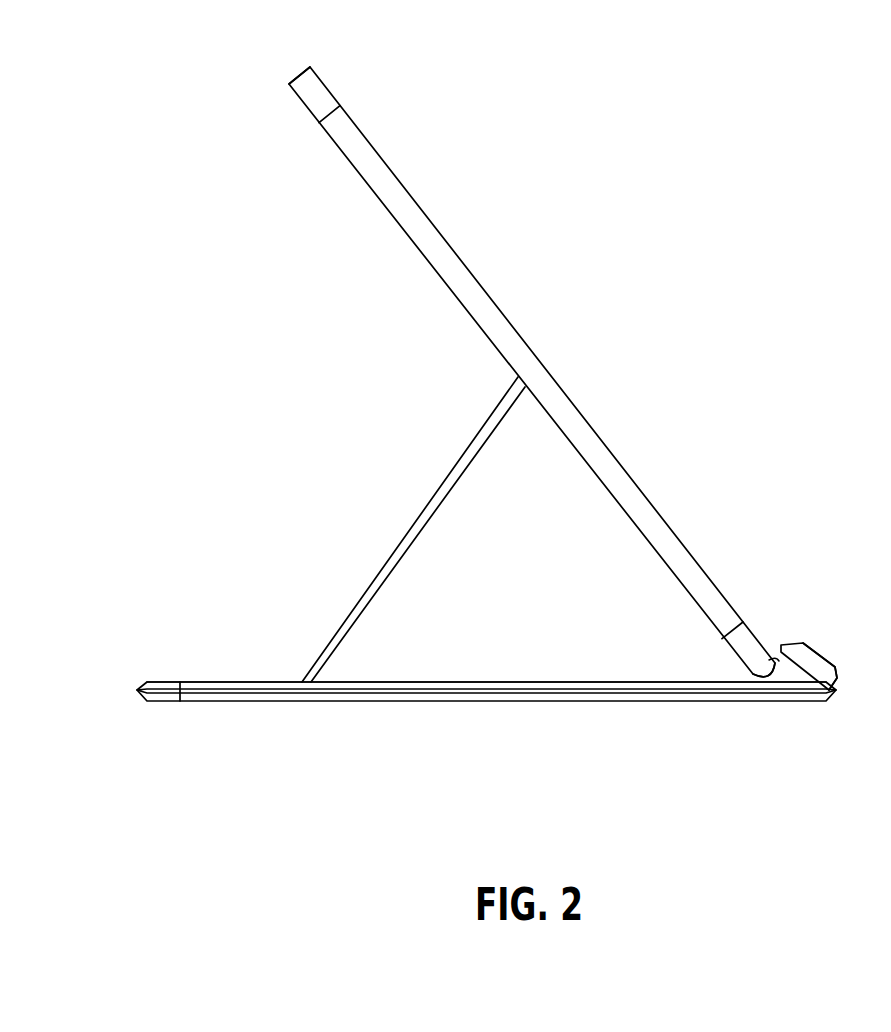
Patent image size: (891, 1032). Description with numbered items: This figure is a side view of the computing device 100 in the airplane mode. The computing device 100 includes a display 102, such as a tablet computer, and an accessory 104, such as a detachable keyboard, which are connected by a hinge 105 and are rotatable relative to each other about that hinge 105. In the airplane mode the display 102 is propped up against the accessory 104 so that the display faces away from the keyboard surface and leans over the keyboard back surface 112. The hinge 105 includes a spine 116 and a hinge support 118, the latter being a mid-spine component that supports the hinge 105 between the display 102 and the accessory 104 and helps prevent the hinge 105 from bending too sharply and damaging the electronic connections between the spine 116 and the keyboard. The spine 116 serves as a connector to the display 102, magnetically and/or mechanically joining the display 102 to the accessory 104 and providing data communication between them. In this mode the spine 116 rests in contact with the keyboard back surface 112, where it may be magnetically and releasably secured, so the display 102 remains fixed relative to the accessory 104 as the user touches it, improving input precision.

The computing device 100 is at (598, 62).
The display 102 is at (502, 332).
The accessory 104 is at (372, 693).
The hinge 105 is at (805, 622).
The keyboard back surface 112 is at (453, 683).
The spine 116 is at (765, 673).
The hinge support 118 is at (805, 670).